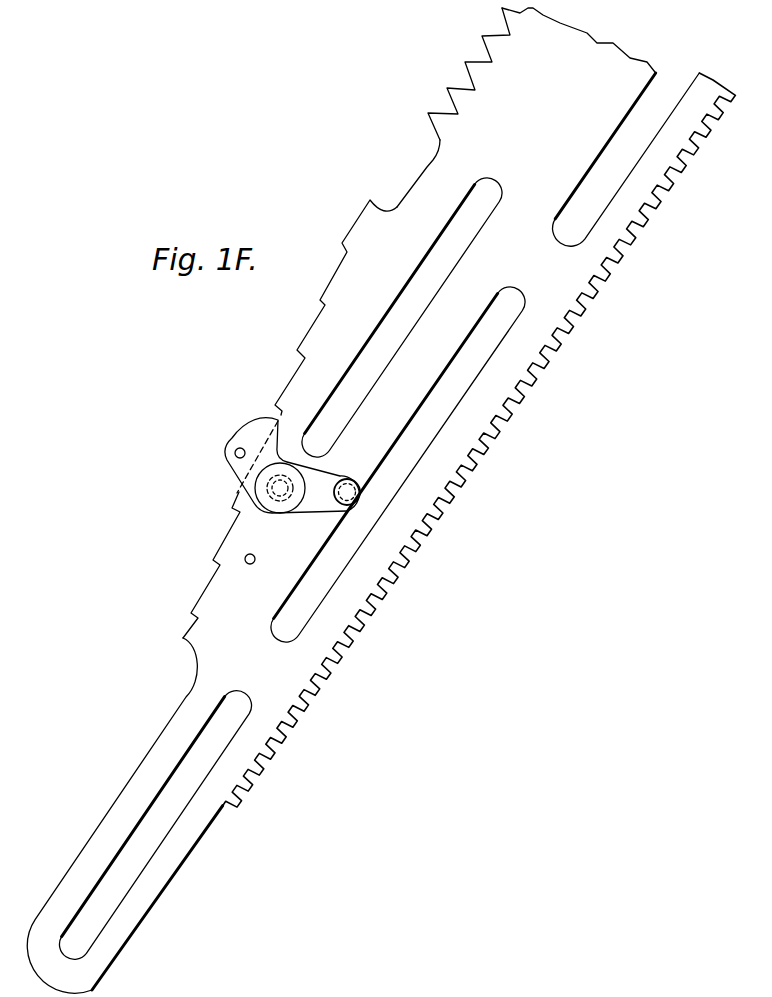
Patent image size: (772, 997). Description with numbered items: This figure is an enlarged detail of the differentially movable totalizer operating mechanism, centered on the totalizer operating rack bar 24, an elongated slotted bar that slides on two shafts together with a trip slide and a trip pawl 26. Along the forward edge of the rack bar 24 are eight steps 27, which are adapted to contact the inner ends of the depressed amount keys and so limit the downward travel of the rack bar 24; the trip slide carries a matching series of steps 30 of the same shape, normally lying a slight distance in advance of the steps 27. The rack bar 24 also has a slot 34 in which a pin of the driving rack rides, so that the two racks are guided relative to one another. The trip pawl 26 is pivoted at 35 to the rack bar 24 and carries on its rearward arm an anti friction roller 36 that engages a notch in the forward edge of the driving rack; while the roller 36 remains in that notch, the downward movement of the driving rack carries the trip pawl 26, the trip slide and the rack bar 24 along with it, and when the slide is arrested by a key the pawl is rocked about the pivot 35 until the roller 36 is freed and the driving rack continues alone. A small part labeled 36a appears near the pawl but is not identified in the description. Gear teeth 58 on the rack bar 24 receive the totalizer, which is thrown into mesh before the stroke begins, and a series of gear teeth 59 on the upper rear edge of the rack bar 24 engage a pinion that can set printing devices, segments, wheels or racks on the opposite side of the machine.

The totalizer operating rack bar 24 is at (458, 152).
The trip pawl 26 is at (247, 425).
The steps 27 is at (342, 252).
The steps 30 is at (234, 452).
The slot 34 is at (383, 487).
The pivot 35 is at (263, 496).
The anti friction roller 36 is at (347, 490).
The pin hole 36a is at (249, 566).
The gear teeth 58 is at (472, 68).
The gear teeth 59 is at (630, 223).